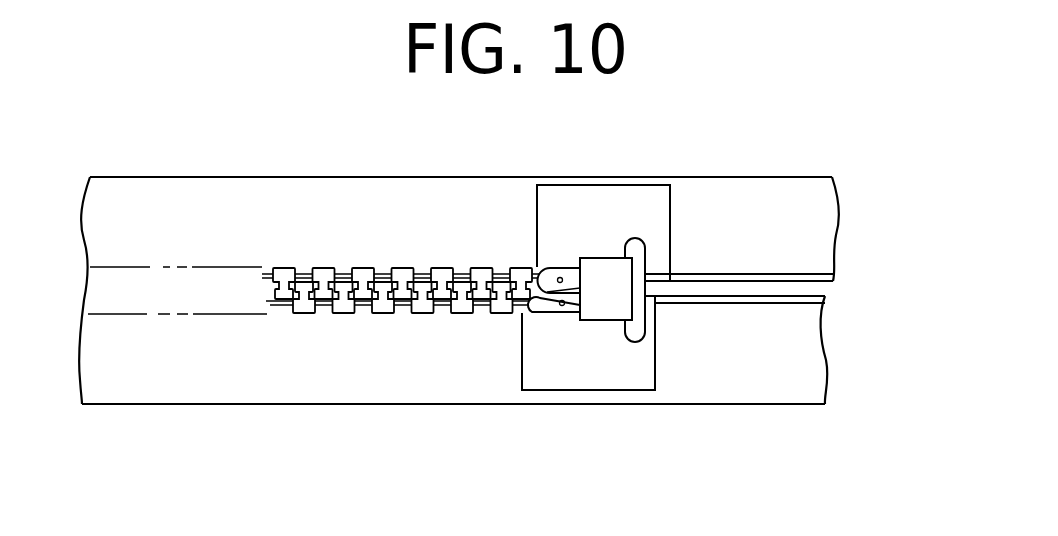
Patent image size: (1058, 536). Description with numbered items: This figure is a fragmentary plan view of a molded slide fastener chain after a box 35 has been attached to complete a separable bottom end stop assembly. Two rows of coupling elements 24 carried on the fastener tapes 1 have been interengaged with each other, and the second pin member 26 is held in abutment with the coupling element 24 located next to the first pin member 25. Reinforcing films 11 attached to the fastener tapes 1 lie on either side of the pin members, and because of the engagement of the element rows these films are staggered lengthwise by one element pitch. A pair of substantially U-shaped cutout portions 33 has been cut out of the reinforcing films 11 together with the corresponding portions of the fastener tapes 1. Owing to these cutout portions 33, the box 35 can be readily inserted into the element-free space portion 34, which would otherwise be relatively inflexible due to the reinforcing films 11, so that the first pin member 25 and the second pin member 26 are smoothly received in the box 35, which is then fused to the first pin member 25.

The fastener tape 1 is at (428, 207).
The reinforcing film 11 is at (625, 203).
The coupling element 24 is at (510, 253).
The first pin member 25 is at (552, 278).
The second pin member 26 is at (542, 305).
The U-shaped cutout portion 33 is at (638, 255).
The element-free space portion 34 is at (775, 297).
The box 35 is at (600, 310).